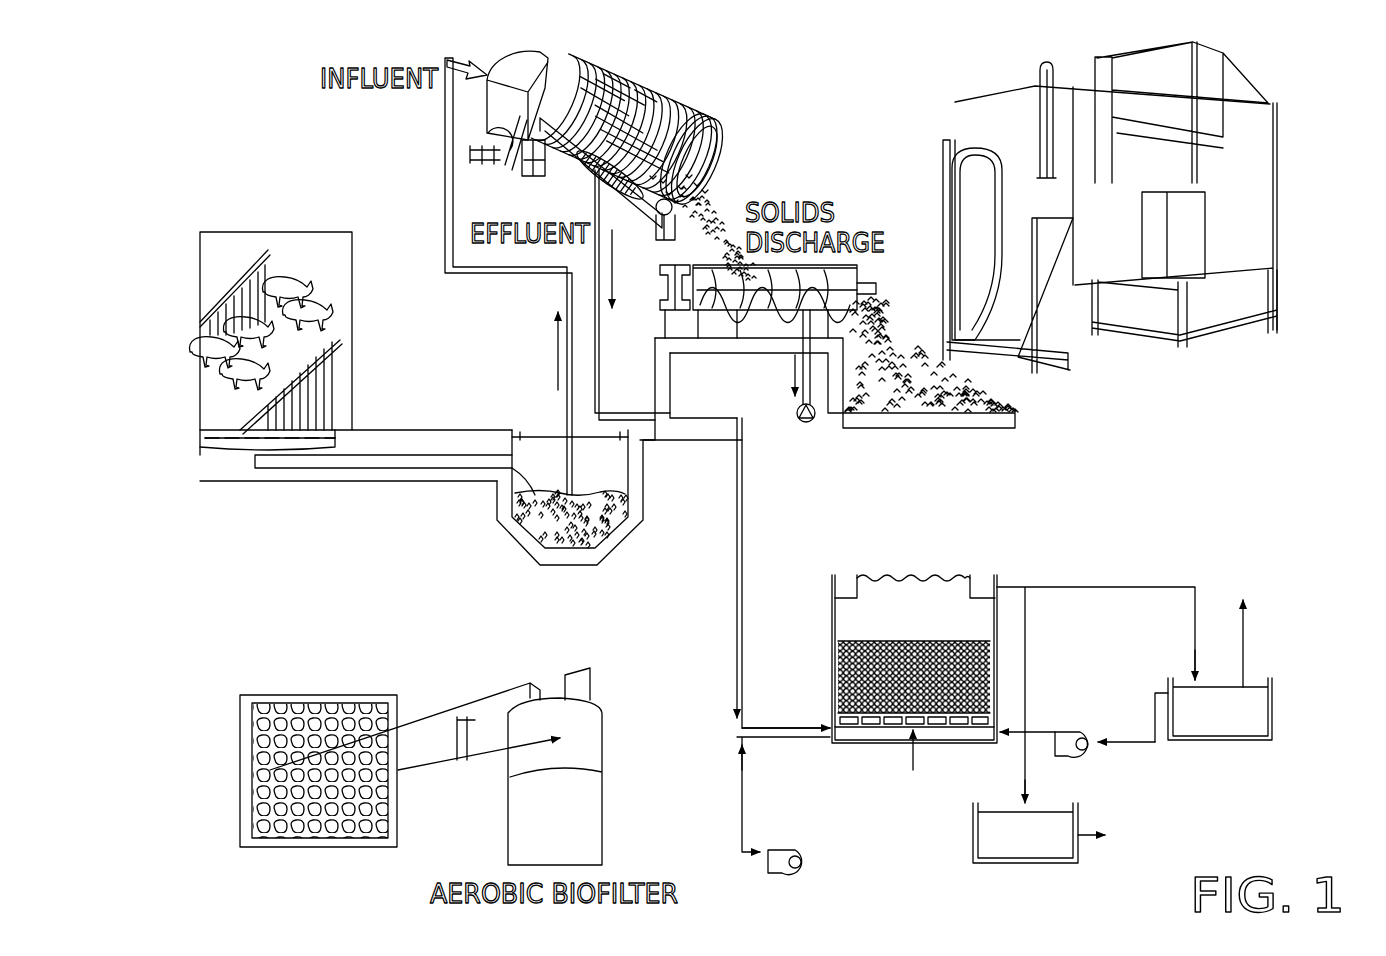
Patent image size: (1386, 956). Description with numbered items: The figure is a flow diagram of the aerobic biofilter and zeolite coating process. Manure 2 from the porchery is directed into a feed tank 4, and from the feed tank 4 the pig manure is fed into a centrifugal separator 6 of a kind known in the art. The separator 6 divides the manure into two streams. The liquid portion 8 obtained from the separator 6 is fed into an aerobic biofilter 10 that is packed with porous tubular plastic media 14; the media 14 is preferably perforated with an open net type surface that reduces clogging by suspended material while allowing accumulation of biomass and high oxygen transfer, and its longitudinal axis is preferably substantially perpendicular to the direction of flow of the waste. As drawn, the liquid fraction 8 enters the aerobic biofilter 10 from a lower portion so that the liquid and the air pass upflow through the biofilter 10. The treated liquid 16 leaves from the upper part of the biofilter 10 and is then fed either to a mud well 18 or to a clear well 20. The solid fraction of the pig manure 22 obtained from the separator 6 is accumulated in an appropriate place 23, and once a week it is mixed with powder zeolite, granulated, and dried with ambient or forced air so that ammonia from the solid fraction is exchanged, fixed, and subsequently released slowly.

The manure 2 is at (283, 470).
The feed tank 4 is at (506, 552).
The separator 6 is at (703, 99).
The liquid portion 8 is at (876, 632).
The aerobic biofilter 10 is at (1054, 662).
The media 14 is at (890, 658).
The treated liquid 16 is at (1012, 588).
The mud well 18 is at (990, 850).
The clear well 20 is at (1275, 688).
The solid fraction of the pig manure 22 is at (727, 193).
The appropriate place 23 is at (900, 422).